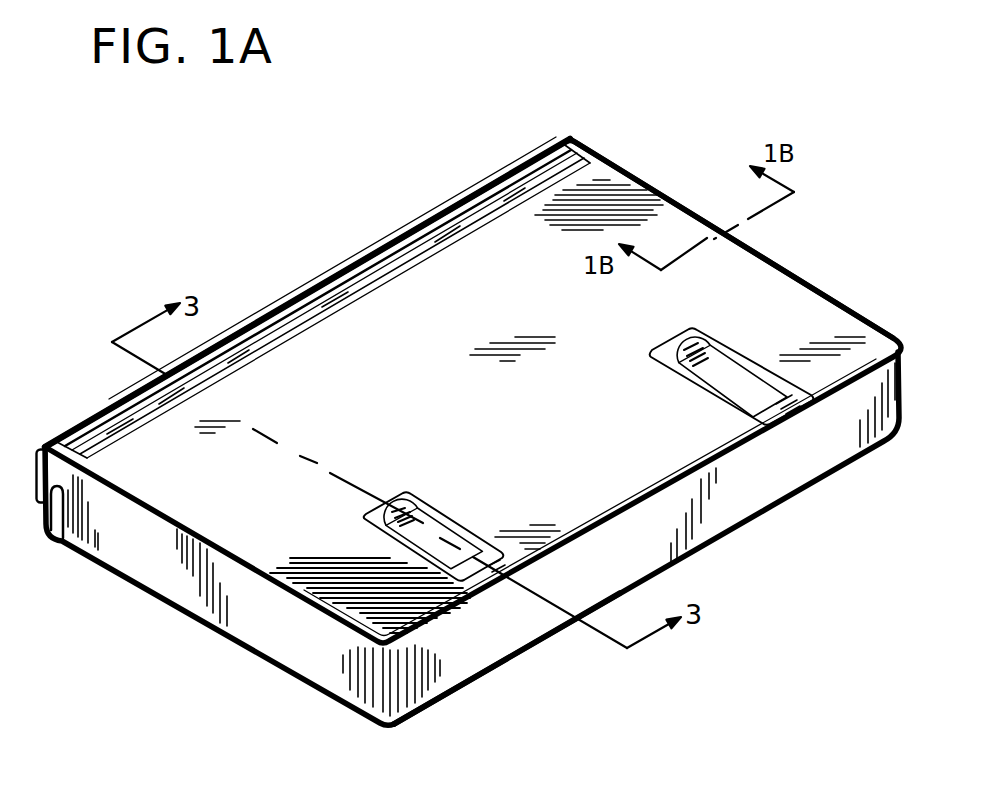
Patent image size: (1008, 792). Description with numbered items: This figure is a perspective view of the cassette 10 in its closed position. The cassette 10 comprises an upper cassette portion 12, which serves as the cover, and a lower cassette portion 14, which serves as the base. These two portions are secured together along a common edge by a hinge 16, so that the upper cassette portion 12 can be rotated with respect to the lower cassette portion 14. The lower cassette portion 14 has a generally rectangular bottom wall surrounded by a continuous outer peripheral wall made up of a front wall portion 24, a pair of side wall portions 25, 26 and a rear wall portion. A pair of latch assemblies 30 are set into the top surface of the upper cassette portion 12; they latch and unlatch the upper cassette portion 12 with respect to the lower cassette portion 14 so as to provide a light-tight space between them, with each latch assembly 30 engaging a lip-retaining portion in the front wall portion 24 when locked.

The cassette 10 is at (447, 100).
The upper cassette portion 12 is at (371, 377).
The lower cassette portion 14 is at (789, 473).
The hinge 16 is at (50, 442).
The front wall portion 24 is at (500, 652).
The side wall portion 25 is at (258, 622).
The side wall portion 26 is at (781, 263).
The latch assembly 30 is at (492, 482).